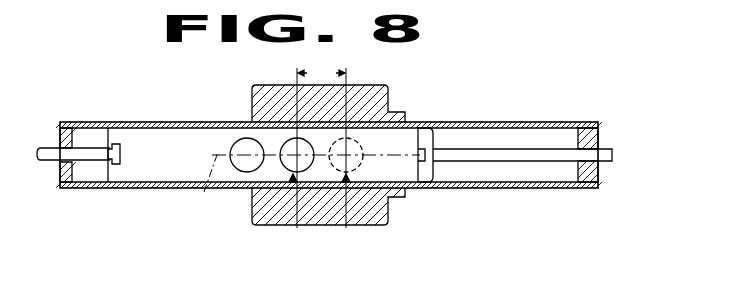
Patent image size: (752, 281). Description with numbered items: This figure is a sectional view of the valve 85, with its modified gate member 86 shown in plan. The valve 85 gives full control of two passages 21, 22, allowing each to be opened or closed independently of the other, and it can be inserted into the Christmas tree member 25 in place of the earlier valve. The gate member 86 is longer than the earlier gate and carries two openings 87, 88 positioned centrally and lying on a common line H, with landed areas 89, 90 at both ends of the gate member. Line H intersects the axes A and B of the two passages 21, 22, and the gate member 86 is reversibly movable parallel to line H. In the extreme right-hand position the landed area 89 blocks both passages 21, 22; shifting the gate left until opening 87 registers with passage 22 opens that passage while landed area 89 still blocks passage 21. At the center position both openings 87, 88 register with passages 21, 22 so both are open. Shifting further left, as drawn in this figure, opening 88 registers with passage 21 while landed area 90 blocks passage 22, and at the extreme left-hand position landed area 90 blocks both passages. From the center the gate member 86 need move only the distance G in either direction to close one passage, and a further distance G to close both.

The Christmas tree member 25 is at (374, 85).
The valve 85 is at (324, 134).
The gate member 86 is at (133, 130).
The opening 87 is at (243, 168).
The opening 88 is at (290, 147).
The landed area 89 is at (178, 162).
The landed area 90 is at (415, 165).
The passage 21 is at (294, 160).
The passage 22 is at (348, 160).
The axis A is at (292, 156).
The axis B is at (350, 154).
The distance G is at (321, 74).
The line H is at (204, 182).